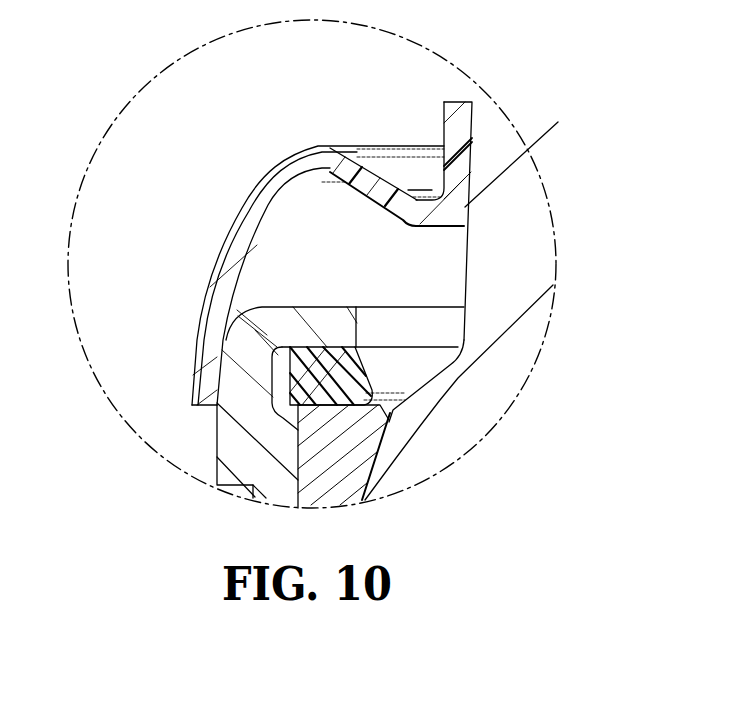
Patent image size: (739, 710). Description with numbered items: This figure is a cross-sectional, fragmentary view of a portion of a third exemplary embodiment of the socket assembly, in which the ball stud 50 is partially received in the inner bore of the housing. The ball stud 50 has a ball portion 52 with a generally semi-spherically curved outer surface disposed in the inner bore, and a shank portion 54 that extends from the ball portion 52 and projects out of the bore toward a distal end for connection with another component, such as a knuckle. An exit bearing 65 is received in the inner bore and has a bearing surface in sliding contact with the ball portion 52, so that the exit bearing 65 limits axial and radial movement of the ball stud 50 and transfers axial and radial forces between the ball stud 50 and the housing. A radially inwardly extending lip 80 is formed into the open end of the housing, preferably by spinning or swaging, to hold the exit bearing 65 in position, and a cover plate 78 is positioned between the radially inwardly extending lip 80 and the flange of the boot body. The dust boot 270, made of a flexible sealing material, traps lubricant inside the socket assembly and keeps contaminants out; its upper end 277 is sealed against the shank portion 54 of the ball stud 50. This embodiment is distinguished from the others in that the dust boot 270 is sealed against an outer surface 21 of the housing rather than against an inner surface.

The outer surface 21 is at (217, 450).
The ball stud 50 is at (437, 269).
The ball portion 52 is at (460, 400).
The shank portion 54 is at (510, 187).
The exit bearing 65 is at (312, 453).
The cover plate 78 is at (317, 378).
The radially inwardly extending lip 80 is at (318, 307).
The dust boot 270 is at (298, 153).
The upper end 277 is at (445, 123).